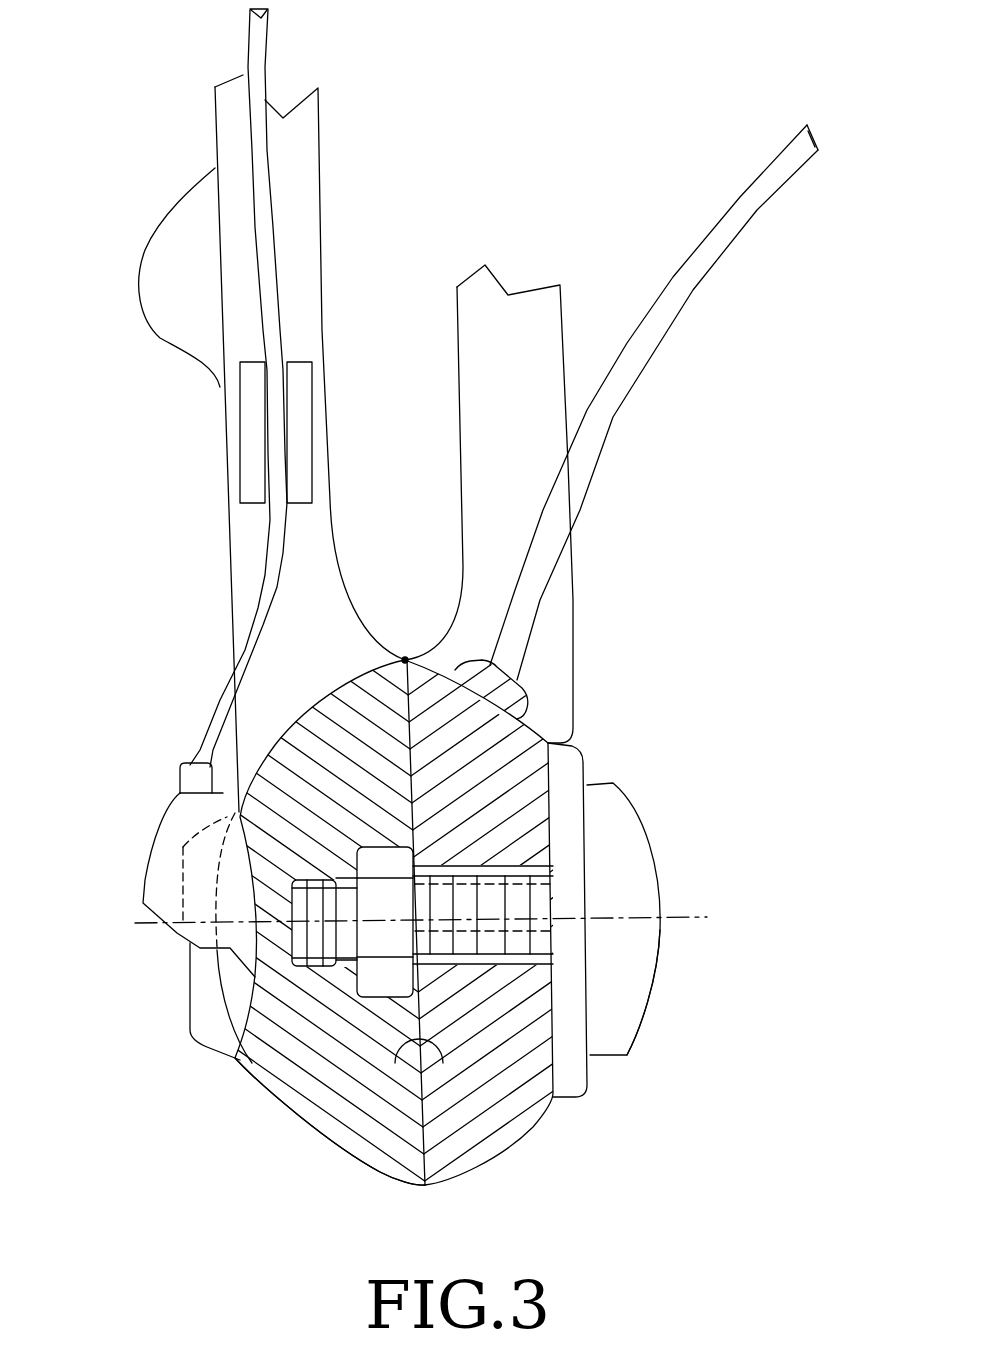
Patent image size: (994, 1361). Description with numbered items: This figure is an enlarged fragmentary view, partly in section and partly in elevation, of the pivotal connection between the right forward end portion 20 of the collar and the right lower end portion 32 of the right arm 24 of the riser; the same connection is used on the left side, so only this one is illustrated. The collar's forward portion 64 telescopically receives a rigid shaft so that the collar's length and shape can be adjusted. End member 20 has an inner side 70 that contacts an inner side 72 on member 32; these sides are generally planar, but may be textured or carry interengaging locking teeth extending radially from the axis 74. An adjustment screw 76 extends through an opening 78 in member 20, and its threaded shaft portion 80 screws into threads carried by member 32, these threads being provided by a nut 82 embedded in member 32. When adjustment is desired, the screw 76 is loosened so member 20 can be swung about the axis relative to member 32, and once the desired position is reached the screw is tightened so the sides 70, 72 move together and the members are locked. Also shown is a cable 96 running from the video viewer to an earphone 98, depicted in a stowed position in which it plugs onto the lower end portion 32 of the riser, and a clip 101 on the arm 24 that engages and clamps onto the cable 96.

The right forward end portion 20 is at (510, 1110).
The right arm 24 is at (290, 215).
The right lower end portion 32 is at (303, 1083).
The forward portion 64 is at (523, 340).
The inner side 70 is at (420, 1110).
The inner side 72 is at (395, 1063).
The axis 74 is at (610, 917).
The adjustment screw 76 is at (620, 958).
The opening 78 is at (487, 877).
The threaded shaft portion 80 is at (490, 938).
The nut 82 is at (383, 935).
The cable 96 is at (273, 548).
The earphone 98 is at (164, 872).
The clip 101 is at (257, 418).